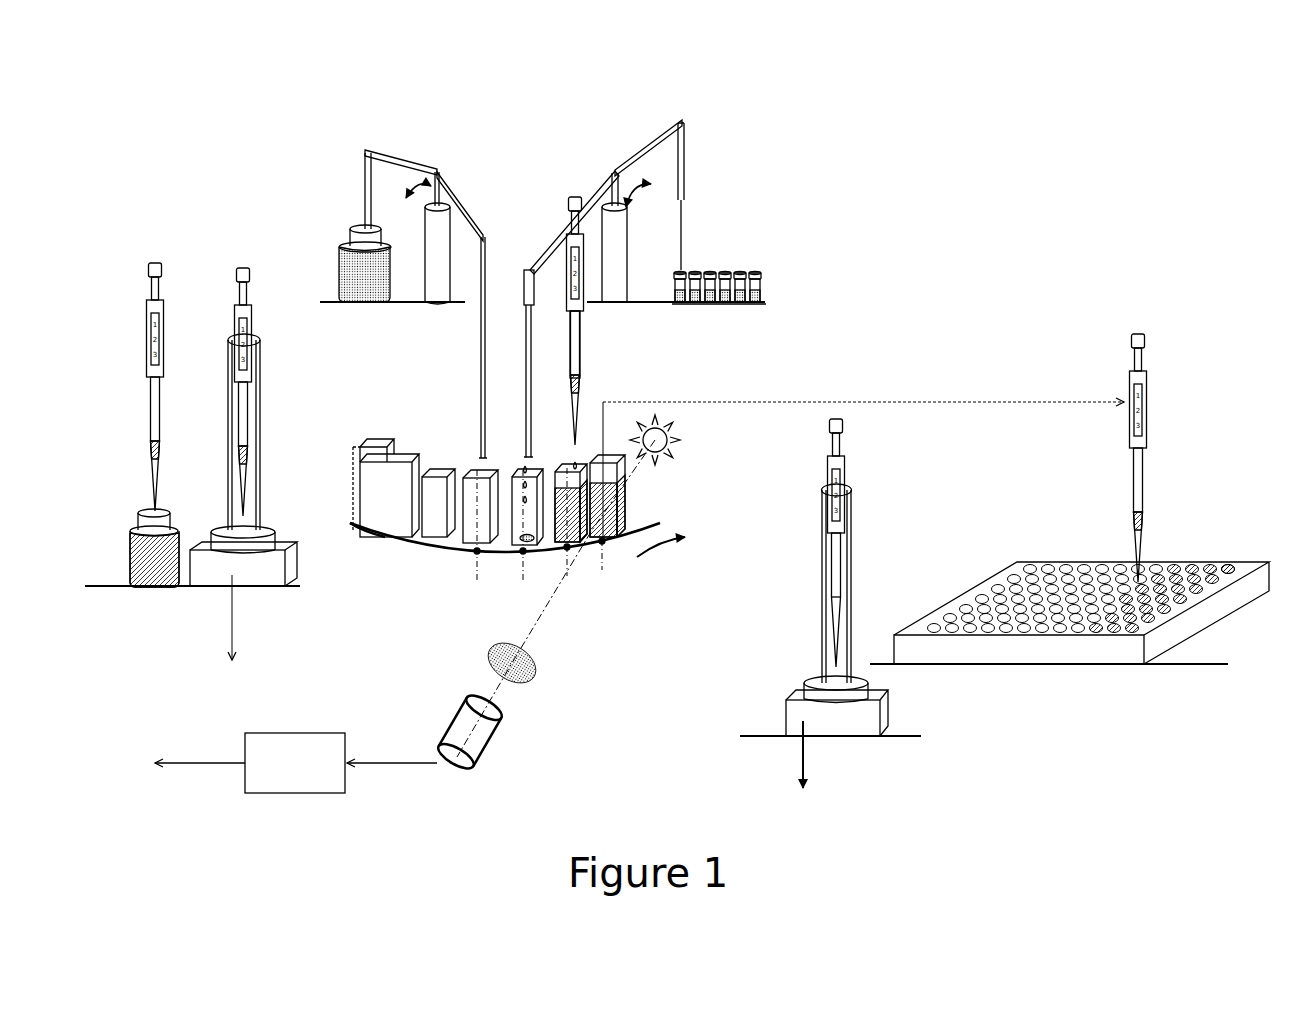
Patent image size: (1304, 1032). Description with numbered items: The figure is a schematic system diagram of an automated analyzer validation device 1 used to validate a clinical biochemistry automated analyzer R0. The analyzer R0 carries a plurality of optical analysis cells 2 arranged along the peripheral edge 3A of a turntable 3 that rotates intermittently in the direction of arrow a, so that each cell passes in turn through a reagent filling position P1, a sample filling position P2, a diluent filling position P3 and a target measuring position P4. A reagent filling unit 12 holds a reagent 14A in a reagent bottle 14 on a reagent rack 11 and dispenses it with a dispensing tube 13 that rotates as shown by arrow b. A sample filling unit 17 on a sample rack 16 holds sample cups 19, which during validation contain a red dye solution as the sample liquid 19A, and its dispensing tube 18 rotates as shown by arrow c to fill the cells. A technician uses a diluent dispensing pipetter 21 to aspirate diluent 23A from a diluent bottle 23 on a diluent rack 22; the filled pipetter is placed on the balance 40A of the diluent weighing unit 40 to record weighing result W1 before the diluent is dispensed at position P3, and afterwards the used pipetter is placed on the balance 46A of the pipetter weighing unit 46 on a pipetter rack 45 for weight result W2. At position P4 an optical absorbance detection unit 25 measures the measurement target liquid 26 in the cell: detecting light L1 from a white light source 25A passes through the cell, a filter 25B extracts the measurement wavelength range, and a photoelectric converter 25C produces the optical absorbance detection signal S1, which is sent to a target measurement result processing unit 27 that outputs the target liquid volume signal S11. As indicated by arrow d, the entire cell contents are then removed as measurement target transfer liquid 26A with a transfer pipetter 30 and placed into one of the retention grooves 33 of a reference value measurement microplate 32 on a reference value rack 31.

The automated analyzer validation device 1 is at (810, 102).
The clinical biochemistry automated analyzer R0 is at (206, 96).
The optical analysis cell 2 is at (380, 460).
The turntable 3 is at (491, 562).
The peripheral edge 3A is at (352, 525).
The reagent rack 11 is at (325, 303).
The reagent filling unit 12 is at (447, 260).
The dispensing tube 13 is at (388, 157).
The reagent bottle 14 is at (323, 236).
The reagent 14A is at (352, 260).
The sample rack 16 is at (583, 313).
The sample filling unit 17 is at (617, 290).
The dispensing tube 18 is at (667, 128).
The sample cup 19 is at (733, 275).
The sample liquid 19A is at (760, 297).
The diluent dispensing pipetter 21 is at (146, 335).
The diluent rack 22 is at (105, 587).
The diluent bottle 23 is at (137, 526).
The diluent 23A is at (130, 550).
The optical absorbance detection unit 25 is at (583, 626).
The white light source 25A is at (669, 440).
The filter 25B is at (540, 680).
The photoelectric converter 25C is at (512, 727).
The measurement target liquid 26 is at (626, 513).
The measurement target transfer liquid 26A is at (1143, 515).
The target measurement result processing unit 27 is at (275, 732).
The transfer pipetter 30 is at (1133, 328).
The reference value rack 31 is at (1069, 644).
The reference value measurement microplate 32 is at (1069, 509).
The retention groove 33 is at (1105, 632).
The diluent weighing unit 40 is at (278, 588).
The balance 40A is at (222, 548).
The pipetter rack 45 is at (752, 737).
The pipetter weighing unit 46 is at (889, 718).
The balance 46A is at (836, 702).
The arrow a is at (667, 555).
The arrow b is at (413, 209).
The arrow c is at (644, 206).
The arrow d is at (992, 401).
The detecting light L1 is at (632, 478).
The reagent filling position P1 is at (475, 553).
The sample filling position P2 is at (524, 553).
The diluent filling position P3 is at (568, 550).
The target measuring position P4 is at (603, 546).
The optical absorbance detection signal S1 is at (367, 767).
The target liquid volume signal S11 is at (183, 768).
The weighing result W1 is at (232, 633).
The weight result W2 is at (810, 772).